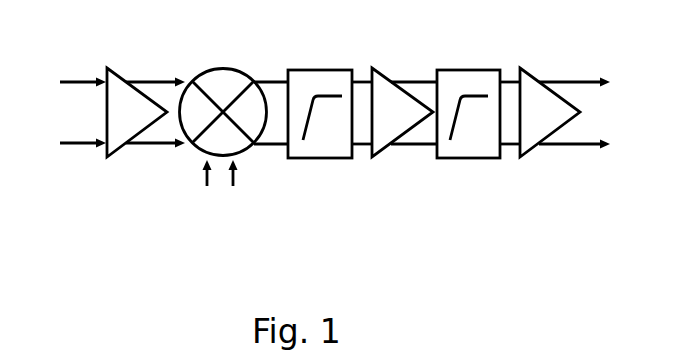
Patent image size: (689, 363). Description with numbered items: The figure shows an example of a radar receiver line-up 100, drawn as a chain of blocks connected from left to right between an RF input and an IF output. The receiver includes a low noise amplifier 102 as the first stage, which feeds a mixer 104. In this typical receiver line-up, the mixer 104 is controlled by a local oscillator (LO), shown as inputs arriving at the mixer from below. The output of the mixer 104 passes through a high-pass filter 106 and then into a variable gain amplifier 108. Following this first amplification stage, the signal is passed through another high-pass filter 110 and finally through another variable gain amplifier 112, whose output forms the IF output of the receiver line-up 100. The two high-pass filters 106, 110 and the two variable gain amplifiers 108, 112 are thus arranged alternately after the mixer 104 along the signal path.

The radar receiver line-up 100 is at (102, 222).
The low noise amplifier 102 is at (123, 78).
The mixer 104 is at (238, 68).
The high-pass filter 106 is at (322, 70).
The variable gain amplifier 108 is at (392, 78).
The another high-pass filter 110 is at (468, 70).
The another variable gain amplifier 112 is at (541, 78).